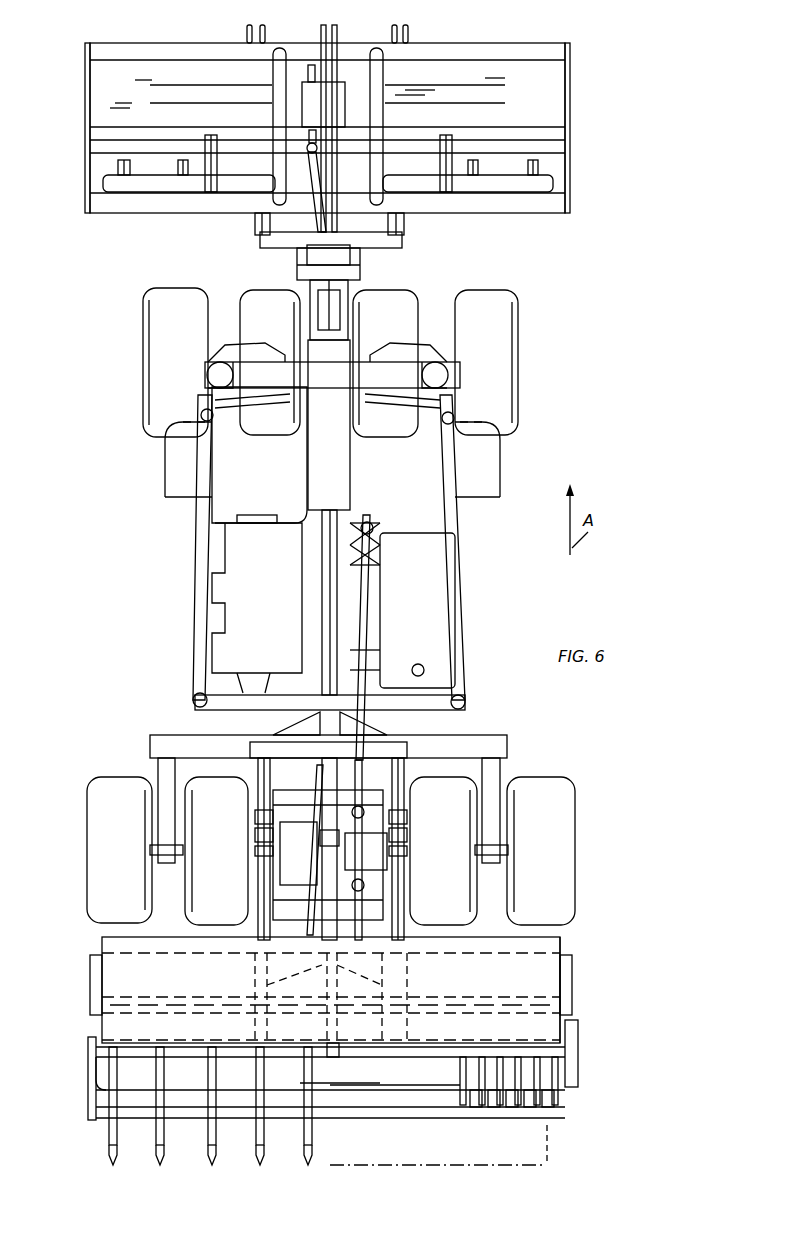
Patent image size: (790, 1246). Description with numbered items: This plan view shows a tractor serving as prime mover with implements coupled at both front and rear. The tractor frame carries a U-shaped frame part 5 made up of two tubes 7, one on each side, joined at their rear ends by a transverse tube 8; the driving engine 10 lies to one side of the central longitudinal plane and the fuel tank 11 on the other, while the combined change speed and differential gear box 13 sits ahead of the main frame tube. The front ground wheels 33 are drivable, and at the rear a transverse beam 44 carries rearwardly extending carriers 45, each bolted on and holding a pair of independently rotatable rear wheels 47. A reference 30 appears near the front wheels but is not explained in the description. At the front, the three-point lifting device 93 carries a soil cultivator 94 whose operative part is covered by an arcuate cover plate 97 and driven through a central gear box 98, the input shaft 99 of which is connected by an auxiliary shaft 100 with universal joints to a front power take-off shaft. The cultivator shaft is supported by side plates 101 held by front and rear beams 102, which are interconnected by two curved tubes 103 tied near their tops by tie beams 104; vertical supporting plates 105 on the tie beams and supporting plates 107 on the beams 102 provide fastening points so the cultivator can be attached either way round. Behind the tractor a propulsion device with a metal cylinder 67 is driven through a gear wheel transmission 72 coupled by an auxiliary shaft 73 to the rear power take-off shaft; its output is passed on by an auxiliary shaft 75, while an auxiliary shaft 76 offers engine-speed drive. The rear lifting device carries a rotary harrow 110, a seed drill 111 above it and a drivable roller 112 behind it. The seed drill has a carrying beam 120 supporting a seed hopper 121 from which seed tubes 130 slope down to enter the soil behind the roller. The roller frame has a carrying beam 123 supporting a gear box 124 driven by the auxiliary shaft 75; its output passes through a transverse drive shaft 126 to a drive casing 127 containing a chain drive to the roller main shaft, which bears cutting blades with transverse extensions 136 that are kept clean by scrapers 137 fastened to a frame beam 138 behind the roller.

The U-shaped frame part 5 is at (468, 577).
The tubes 7 is at (200, 622).
The tube 8 is at (420, 700).
The driving engine 10 is at (250, 605).
The fuel tank 11 is at (426, 597).
The combined change speed and differential gear box 13 is at (322, 452).
The steering pivots 30 is at (218, 375).
The ground wheels 33 is at (152, 328).
The beam 44 is at (490, 738).
The carriers 45 is at (165, 820).
The rear wheels 47 is at (108, 785).
The metal cylinder 67 is at (290, 860).
The gear wheel transmission 72 is at (372, 858).
The auxiliary shaft 73 is at (365, 626).
The auxiliary shaft 75 is at (360, 912).
The auxiliary shaft 76 is at (310, 888).
The three-point lifting device 93 is at (244, 245).
The soil cultivator 94 is at (522, 218).
The arcuate cover plate 97 is at (555, 95).
The gear box 98 is at (376, 100).
The input shaft 99 is at (302, 90).
The auxiliary shaft 100 is at (310, 257).
The side plates 101 is at (85, 95).
The beams 102 is at (148, 46).
The curved tubes 103 is at (278, 72).
The tie beams 104 is at (345, 62).
The supporting plates 105 is at (322, 42).
The supporting plates 107 is at (248, 35).
The rotary harrow 110 is at (86, 978).
The seed drill 111 is at (574, 940).
The drivable roller 112 is at (388, 1100).
The carrying beam 120 is at (172, 1002).
The seed hopper 121 is at (545, 980).
The carrying beam 123 is at (92, 1050).
The gear box 124 is at (352, 1048).
The drive shaft 126 is at (478, 1025).
The drive casing 127 is at (580, 1038).
The seed tubes 130 is at (214, 1134).
The transverse extensions 136 is at (470, 1100).
The scrapers 137 is at (530, 1108).
The frame beam 138 is at (402, 1115).